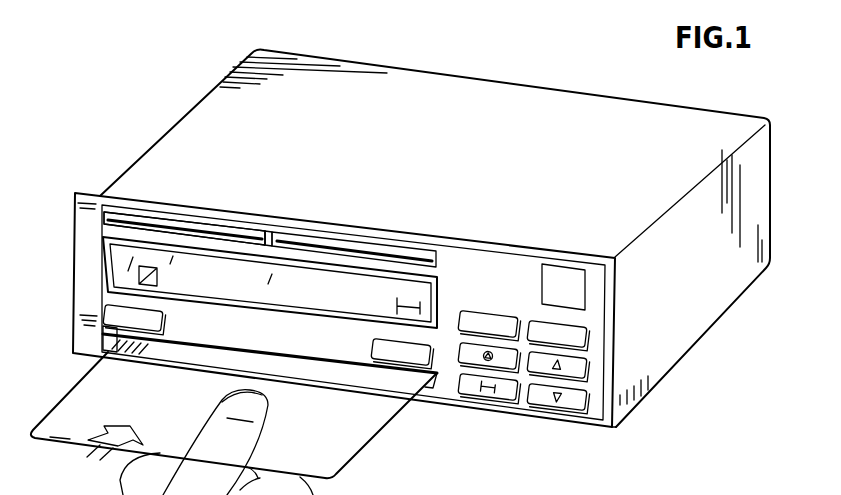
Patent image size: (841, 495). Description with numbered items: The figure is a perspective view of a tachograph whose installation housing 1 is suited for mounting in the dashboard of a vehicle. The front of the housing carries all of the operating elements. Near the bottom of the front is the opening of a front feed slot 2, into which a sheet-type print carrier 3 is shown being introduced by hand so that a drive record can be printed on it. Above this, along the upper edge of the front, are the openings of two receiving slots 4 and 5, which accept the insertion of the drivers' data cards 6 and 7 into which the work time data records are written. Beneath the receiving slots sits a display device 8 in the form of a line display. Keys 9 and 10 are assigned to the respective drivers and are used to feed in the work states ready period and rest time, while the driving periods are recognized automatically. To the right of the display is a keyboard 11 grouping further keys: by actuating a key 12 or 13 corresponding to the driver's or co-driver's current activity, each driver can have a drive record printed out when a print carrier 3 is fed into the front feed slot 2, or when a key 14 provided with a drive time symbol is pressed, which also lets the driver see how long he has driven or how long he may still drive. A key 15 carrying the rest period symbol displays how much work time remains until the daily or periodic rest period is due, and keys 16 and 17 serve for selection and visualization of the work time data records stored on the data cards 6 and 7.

The installation housing 1 is at (553, 148).
The front feed slot 2 is at (430, 390).
The sheet-type print carrier 3 is at (322, 448).
The receiving slot 4 is at (116, 210).
The receiving slot 5 is at (270, 236).
The driver's data card 6 is at (227, 219).
The driver's data card 7 is at (357, 247).
The display device 8 is at (437, 300).
The key 9 is at (163, 320).
The key 10 is at (373, 350).
The keyboard 11 is at (580, 430).
The key 12 is at (508, 308).
The key 13 is at (577, 323).
The key 14 is at (462, 355).
The key 15 is at (500, 393).
The key 16 is at (588, 366).
The key 17 is at (543, 400).